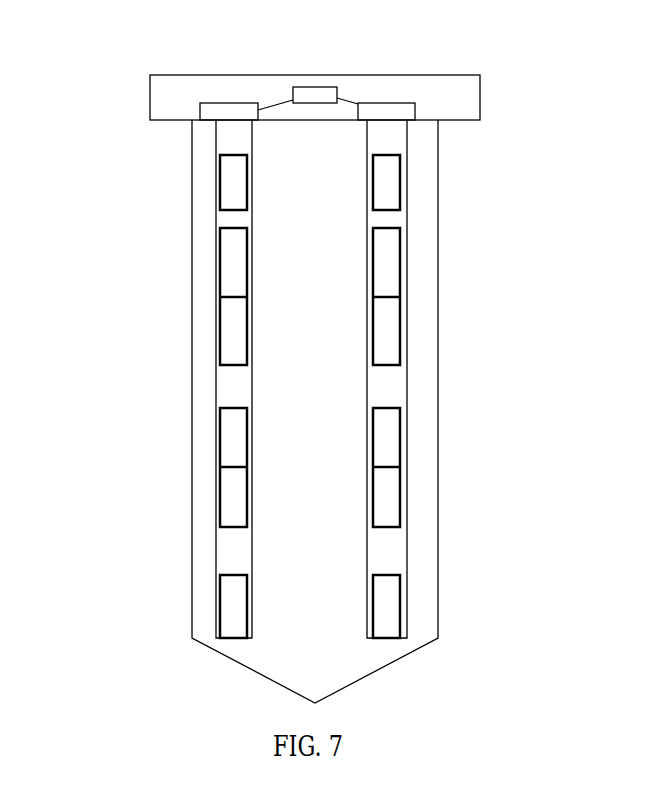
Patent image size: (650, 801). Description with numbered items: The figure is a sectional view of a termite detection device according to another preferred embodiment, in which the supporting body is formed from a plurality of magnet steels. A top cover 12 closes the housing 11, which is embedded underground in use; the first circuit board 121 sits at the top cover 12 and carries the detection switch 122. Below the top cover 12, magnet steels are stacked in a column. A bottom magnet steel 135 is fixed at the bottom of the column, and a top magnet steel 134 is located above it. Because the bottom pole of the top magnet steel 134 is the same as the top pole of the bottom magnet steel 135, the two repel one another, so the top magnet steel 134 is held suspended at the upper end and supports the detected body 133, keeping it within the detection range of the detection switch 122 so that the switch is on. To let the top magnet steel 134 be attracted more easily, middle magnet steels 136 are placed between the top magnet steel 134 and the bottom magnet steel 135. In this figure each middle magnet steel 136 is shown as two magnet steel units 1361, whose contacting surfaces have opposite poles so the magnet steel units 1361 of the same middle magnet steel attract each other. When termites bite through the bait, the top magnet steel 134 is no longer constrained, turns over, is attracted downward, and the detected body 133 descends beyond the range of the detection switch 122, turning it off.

The housing 11 is at (192, 617).
The top cover 12 is at (150, 100).
The first circuit board 121 is at (317, 88).
The detection switch 122 is at (230, 103).
The detected body 133 is at (216, 143).
The top magnet steel 134 is at (221, 190).
The bottom magnet steel 135 is at (217, 602).
The middle magnet steel 136 is at (290, 377).
The magnet steel unit 1361 is at (220, 490).